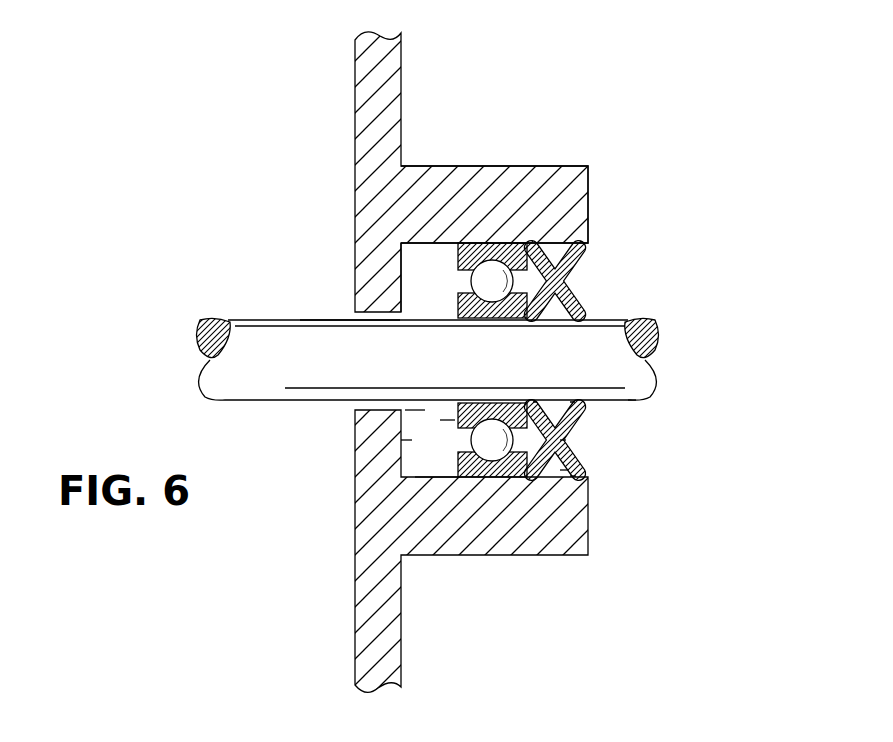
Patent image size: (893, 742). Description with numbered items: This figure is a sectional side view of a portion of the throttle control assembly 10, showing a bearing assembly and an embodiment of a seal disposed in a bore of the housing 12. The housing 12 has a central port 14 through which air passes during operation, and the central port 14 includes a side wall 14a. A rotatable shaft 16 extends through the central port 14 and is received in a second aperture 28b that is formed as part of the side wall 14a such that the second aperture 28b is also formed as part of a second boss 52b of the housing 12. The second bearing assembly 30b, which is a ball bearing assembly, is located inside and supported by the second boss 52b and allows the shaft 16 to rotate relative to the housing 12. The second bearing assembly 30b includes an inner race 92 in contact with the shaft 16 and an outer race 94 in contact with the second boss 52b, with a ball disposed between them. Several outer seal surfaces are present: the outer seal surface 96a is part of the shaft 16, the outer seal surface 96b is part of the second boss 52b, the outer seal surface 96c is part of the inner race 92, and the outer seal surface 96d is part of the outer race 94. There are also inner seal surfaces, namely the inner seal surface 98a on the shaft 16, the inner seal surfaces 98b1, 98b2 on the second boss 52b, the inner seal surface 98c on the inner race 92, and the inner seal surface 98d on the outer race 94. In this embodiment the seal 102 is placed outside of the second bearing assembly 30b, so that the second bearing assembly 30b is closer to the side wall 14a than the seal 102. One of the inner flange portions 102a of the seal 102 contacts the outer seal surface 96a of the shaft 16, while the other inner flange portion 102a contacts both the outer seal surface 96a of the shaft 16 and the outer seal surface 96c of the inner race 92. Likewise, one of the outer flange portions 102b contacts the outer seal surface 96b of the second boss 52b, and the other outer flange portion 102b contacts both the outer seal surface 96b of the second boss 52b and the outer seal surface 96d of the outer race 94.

The throttle control assembly 10 is at (719, 138).
The housing 12 is at (352, 83).
The central port 14 is at (233, 150).
The side wall 14a is at (357, 272).
The shaft 16 is at (260, 323).
The second aperture 28b is at (372, 315).
The second bearing assembly 30b is at (440, 265).
The second boss 52b is at (590, 200).
The inner race 92 is at (483, 318).
The outer race 94 is at (518, 252).
The outer seal surface 96a is at (630, 400).
The outer seal surface 96b is at (580, 258).
The outer seal surface 96c is at (565, 440).
The outer seal surface 96d is at (565, 455).
The inner seal surface 98a is at (420, 405).
The inner seal surface 98b1 is at (408, 450).
The inner seal surface 98b2 is at (415, 477).
The inner seal surface 98c is at (453, 418).
The inner seal surface 98d is at (440, 478).
The seal 102 is at (577, 447).
The inner flange portion 102a is at (572, 402).
The outer flange portion 102b is at (575, 455).